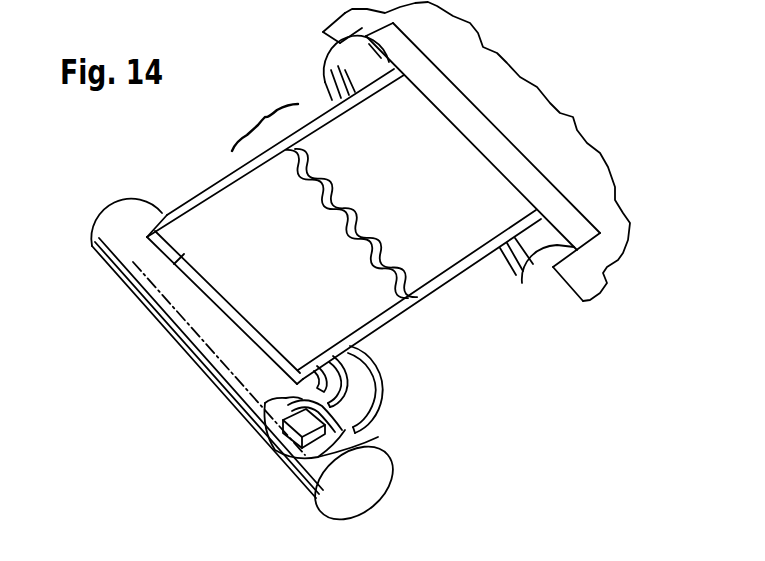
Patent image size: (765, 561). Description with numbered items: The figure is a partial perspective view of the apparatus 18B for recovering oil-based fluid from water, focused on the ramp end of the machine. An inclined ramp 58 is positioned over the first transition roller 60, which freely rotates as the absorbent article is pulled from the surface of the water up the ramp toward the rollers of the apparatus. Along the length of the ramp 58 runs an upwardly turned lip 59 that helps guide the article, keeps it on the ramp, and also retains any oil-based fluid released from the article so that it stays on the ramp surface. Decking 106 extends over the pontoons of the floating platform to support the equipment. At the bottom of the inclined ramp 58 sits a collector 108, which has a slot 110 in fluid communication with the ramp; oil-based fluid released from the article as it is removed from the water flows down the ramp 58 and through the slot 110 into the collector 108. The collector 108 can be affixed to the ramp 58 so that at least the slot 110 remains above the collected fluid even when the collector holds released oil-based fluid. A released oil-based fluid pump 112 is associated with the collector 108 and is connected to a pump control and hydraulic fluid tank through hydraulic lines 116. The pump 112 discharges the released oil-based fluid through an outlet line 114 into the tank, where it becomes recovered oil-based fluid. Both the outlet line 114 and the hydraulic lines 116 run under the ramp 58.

The apparatus 18B is at (262, 82).
The inclined ramp 58 is at (293, 260).
The upwardly turned lip 59 is at (225, 179).
The first transition roller 60 is at (325, 68).
The decking 106 is at (358, 32).
The collector 108 is at (180, 317).
The slot 110 is at (176, 262).
The released oil-based fluid pump 112 is at (298, 436).
The outlet line 114 is at (381, 360).
The hydraulic lines 116 is at (331, 382).